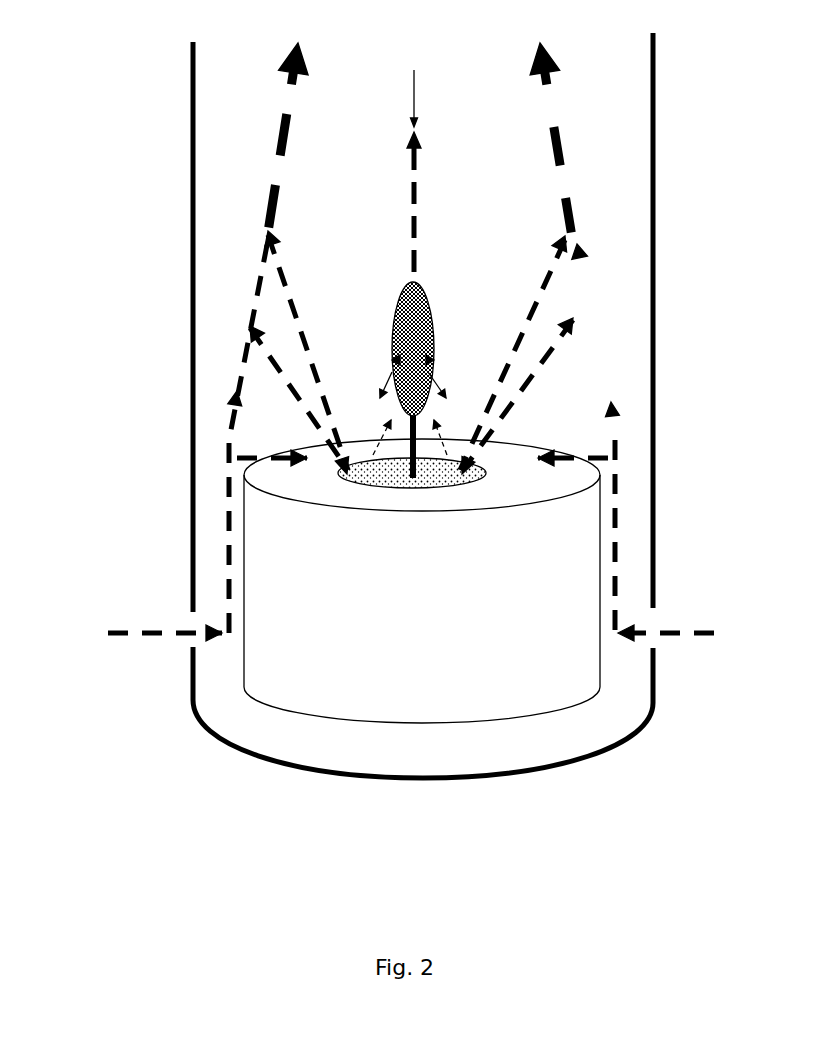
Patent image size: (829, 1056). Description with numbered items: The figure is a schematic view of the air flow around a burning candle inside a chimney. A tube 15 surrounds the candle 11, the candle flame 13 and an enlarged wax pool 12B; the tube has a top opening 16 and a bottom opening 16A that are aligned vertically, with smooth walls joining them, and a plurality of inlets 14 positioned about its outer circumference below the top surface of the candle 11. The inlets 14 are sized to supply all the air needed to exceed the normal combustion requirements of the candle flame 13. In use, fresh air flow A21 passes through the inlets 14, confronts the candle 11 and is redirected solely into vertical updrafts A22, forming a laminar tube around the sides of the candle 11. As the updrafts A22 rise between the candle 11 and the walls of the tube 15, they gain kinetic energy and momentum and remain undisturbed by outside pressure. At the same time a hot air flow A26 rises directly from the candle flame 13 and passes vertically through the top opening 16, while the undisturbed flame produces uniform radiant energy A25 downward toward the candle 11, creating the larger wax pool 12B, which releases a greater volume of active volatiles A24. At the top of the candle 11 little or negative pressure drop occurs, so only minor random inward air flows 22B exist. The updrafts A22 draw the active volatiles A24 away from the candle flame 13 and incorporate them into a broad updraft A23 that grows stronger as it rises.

The candle 11 is at (552, 712).
The wax pool 12B is at (487, 479).
The candle flame 13 is at (425, 290).
The inlets 14 is at (663, 613).
The tube 15 is at (657, 317).
The top opening 16 is at (659, 33).
The bottom opening 16A is at (648, 718).
The inward air flows 22B is at (290, 473).
The fresh air flow A21 is at (115, 638).
The updrafts A22 is at (222, 488).
The broad updraft A23 is at (275, 148).
The active volatiles A24 is at (327, 372).
The radiant energy A25 is at (383, 392).
The hot air flow A26 is at (419, 151).